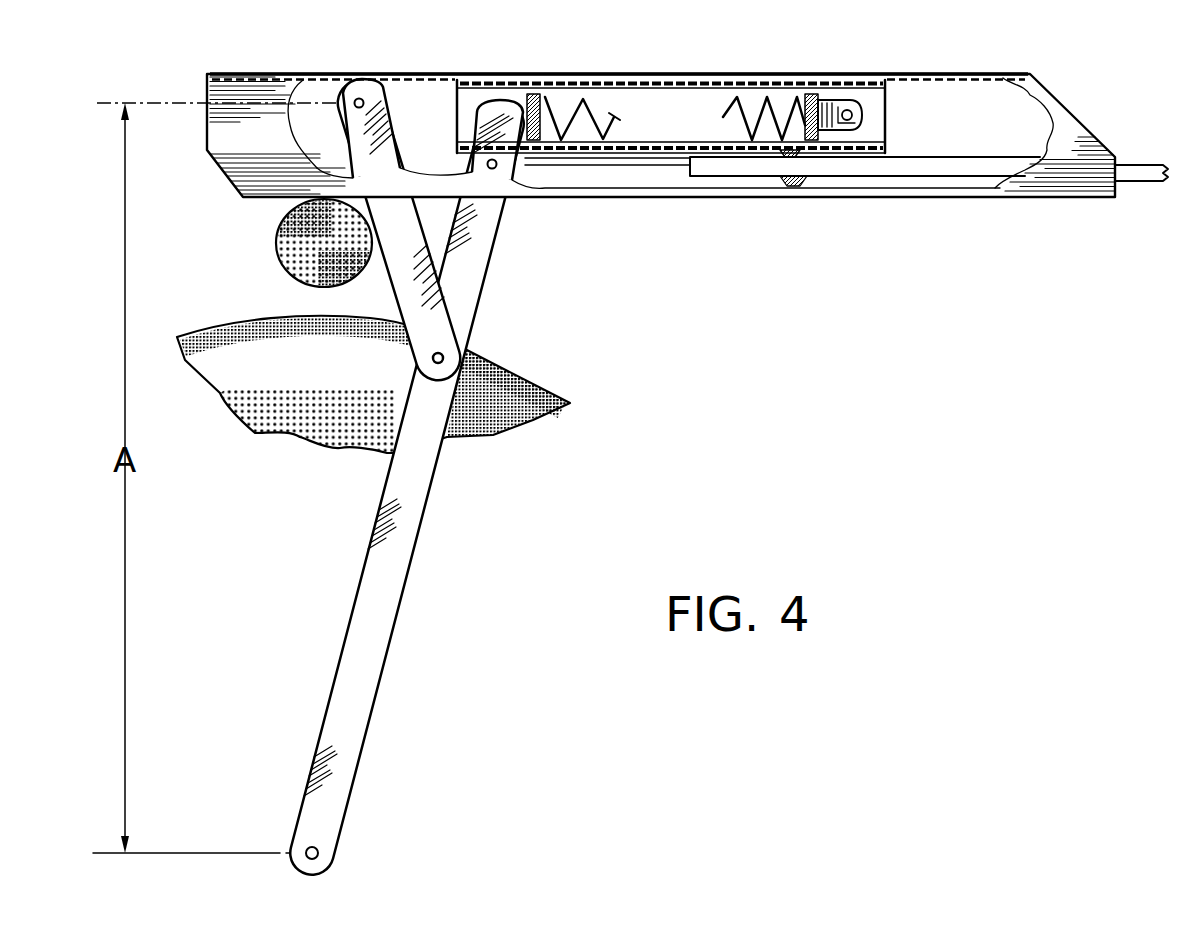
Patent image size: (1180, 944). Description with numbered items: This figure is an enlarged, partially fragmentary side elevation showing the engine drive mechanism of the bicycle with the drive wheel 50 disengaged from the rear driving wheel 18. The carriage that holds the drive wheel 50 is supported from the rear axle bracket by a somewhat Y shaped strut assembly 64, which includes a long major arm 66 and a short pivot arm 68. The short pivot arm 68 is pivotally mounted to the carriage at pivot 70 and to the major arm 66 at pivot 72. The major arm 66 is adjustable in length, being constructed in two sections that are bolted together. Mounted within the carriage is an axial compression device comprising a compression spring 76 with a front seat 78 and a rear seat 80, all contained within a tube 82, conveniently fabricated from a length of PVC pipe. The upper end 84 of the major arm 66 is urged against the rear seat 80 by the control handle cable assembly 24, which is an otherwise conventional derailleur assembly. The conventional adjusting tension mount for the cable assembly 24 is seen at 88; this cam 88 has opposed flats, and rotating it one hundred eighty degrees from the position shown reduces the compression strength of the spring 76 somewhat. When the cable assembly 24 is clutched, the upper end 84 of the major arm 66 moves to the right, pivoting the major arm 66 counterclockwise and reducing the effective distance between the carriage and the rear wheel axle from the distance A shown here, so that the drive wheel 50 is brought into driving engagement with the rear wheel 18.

The rear driving wheel 18 is at (290, 407).
The control handle cable assembly 24 is at (664, 162).
The drive wheel 50 is at (297, 252).
The Y shaped strut assembly 64 is at (481, 431).
The major arm 66 is at (382, 603).
The short pivot arm 68 is at (393, 257).
The pivot mounting to carriage 70 is at (362, 100).
The pivot mounting to major arm 72 is at (445, 357).
The compression spring 76 is at (601, 116).
The front seat 78 is at (805, 96).
The rear seat 80 is at (572, 72).
The tube 82 is at (887, 141).
The upper end of major arm 84 is at (496, 116).
The adjusting tension mount / cam 88 is at (862, 112).